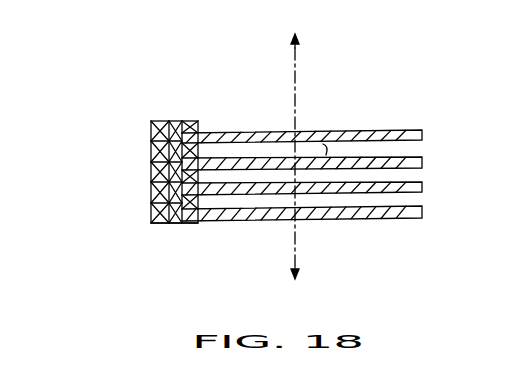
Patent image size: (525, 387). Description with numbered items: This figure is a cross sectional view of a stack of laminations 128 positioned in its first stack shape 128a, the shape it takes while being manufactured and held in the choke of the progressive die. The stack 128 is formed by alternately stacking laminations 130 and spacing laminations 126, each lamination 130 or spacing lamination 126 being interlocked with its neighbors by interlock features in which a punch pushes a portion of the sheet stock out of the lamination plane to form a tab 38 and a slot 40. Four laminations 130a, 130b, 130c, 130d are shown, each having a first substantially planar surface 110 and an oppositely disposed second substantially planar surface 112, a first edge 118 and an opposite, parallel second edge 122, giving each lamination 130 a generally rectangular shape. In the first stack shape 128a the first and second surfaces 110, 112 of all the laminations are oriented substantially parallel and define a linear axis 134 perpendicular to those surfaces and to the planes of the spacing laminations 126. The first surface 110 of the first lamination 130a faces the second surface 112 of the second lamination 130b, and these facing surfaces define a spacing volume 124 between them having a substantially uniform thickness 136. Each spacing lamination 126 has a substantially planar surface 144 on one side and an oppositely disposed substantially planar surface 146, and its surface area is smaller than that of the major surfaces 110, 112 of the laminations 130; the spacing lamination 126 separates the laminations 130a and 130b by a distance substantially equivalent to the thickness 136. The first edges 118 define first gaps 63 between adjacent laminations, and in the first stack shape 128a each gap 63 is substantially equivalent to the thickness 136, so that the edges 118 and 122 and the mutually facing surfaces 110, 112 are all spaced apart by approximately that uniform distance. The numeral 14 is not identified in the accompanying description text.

The substrate 14 is at (516, 236).
The tab 38 is at (175, 223).
The slot 40 is at (170, 120).
The first gap 63 is at (425, 150).
The first substantially planar surface 110 is at (419, 147).
The second substantially planar surface 112 is at (390, 128).
The first edge 118 is at (422, 136).
The second edge 122 is at (151, 138).
The spacing volume 124 is at (220, 146).
The spacing lamination 126 is at (151, 124).
The stack of laminations 128 is at (185, 72).
The first stack shape 128a is at (383, 64).
The lamination 130 is at (254, 131).
The first lamination 130a is at (422, 132).
The second lamination 130b is at (422, 162).
The third lamination 130c is at (151, 190).
The fourth lamination 130d is at (150, 222).
The linear axis 134 is at (299, 51).
The substantially uniform thickness 136 is at (340, 130).
The substantially planar surface 144 is at (151, 114).
The substantially planar surface 146 is at (207, 120).